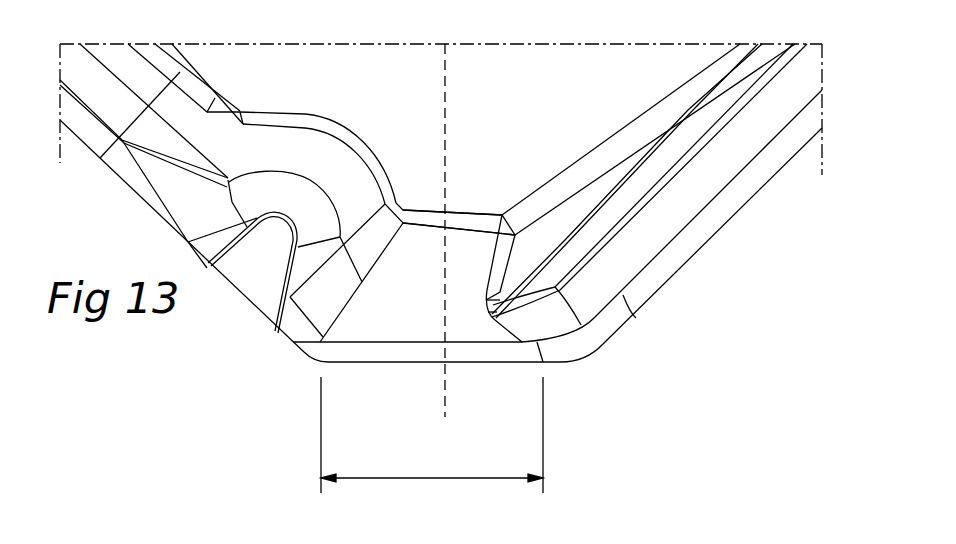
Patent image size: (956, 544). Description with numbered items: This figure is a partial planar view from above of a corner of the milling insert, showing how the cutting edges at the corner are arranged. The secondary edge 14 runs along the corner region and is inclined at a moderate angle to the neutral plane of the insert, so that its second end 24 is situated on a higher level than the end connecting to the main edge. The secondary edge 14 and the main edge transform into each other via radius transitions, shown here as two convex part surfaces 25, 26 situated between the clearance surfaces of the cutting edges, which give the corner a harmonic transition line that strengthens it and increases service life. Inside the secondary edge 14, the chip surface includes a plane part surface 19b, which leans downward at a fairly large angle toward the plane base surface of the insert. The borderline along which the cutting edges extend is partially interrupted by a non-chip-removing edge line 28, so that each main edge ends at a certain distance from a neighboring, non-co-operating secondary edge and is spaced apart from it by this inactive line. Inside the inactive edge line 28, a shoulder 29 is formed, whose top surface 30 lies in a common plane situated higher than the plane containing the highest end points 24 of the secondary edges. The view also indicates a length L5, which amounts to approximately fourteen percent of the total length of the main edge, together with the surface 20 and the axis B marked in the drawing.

The secondary edge 14 is at (413, 363).
The plane part surface 19b is at (430, 305).
The chamfer surface 20 is at (636, 318).
The second end 24 is at (313, 363).
The convex part surface 25 is at (580, 362).
The convex part surface 26 is at (557, 363).
The non-chip-removing edge line 28 is at (245, 307).
The shoulder 29 is at (288, 180).
The top surface 30 is at (276, 281).
The axis B is at (445, 151).
The length L5 is at (432, 435).